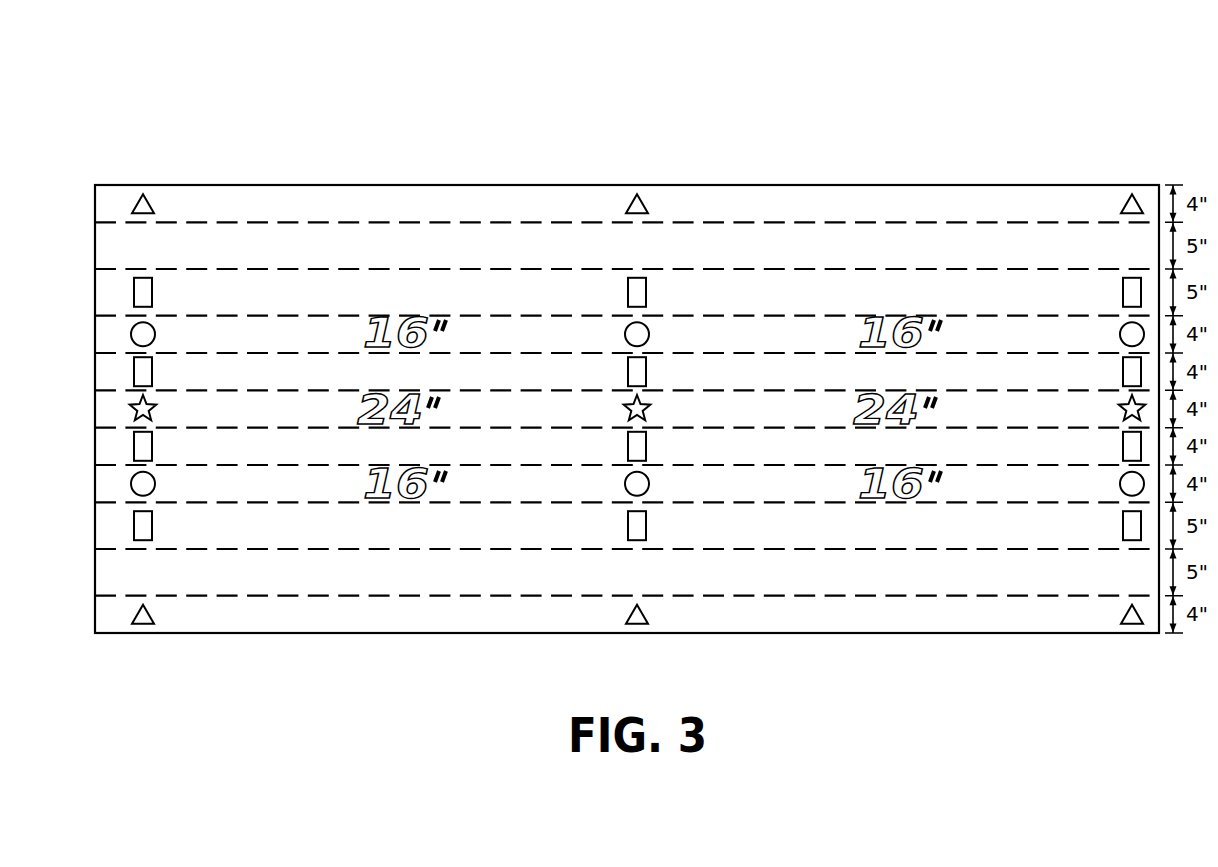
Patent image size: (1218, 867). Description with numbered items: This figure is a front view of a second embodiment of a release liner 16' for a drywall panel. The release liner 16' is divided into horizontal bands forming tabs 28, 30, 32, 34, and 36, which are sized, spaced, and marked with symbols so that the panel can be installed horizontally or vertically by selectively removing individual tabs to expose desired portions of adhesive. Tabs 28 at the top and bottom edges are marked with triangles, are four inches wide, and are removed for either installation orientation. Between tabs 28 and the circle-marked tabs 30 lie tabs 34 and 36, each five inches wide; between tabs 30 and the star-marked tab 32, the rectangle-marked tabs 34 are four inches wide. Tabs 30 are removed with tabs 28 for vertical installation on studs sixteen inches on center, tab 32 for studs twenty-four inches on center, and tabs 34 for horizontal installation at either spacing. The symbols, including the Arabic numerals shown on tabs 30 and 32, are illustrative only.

The release liner 16' is at (627, 329).
The tabs 28 is at (117, 204).
The tabs 36 is at (117, 246).
The tabs 34 is at (117, 292).
The tabs 30 is at (117, 334).
The tab 32 is at (117, 409).